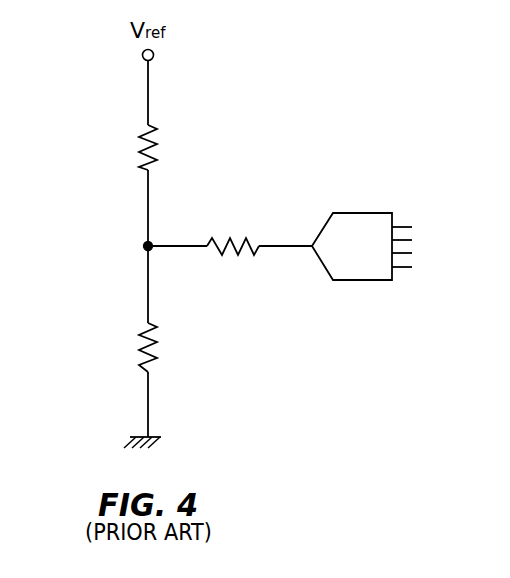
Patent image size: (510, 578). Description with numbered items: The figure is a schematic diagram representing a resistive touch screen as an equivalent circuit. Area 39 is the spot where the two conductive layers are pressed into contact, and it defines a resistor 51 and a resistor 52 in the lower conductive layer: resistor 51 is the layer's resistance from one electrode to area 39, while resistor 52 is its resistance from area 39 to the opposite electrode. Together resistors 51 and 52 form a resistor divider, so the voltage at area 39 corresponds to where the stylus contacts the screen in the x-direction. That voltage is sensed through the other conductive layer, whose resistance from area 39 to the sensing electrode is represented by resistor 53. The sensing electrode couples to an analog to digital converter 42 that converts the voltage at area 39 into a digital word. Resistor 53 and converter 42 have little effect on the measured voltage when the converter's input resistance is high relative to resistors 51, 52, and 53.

The area 39 is at (119, 254).
The analog to digital converter 42 is at (372, 258).
The resistor 51 is at (156, 135).
The resistor 52 is at (232, 242).
The resistor 53 is at (156, 338).